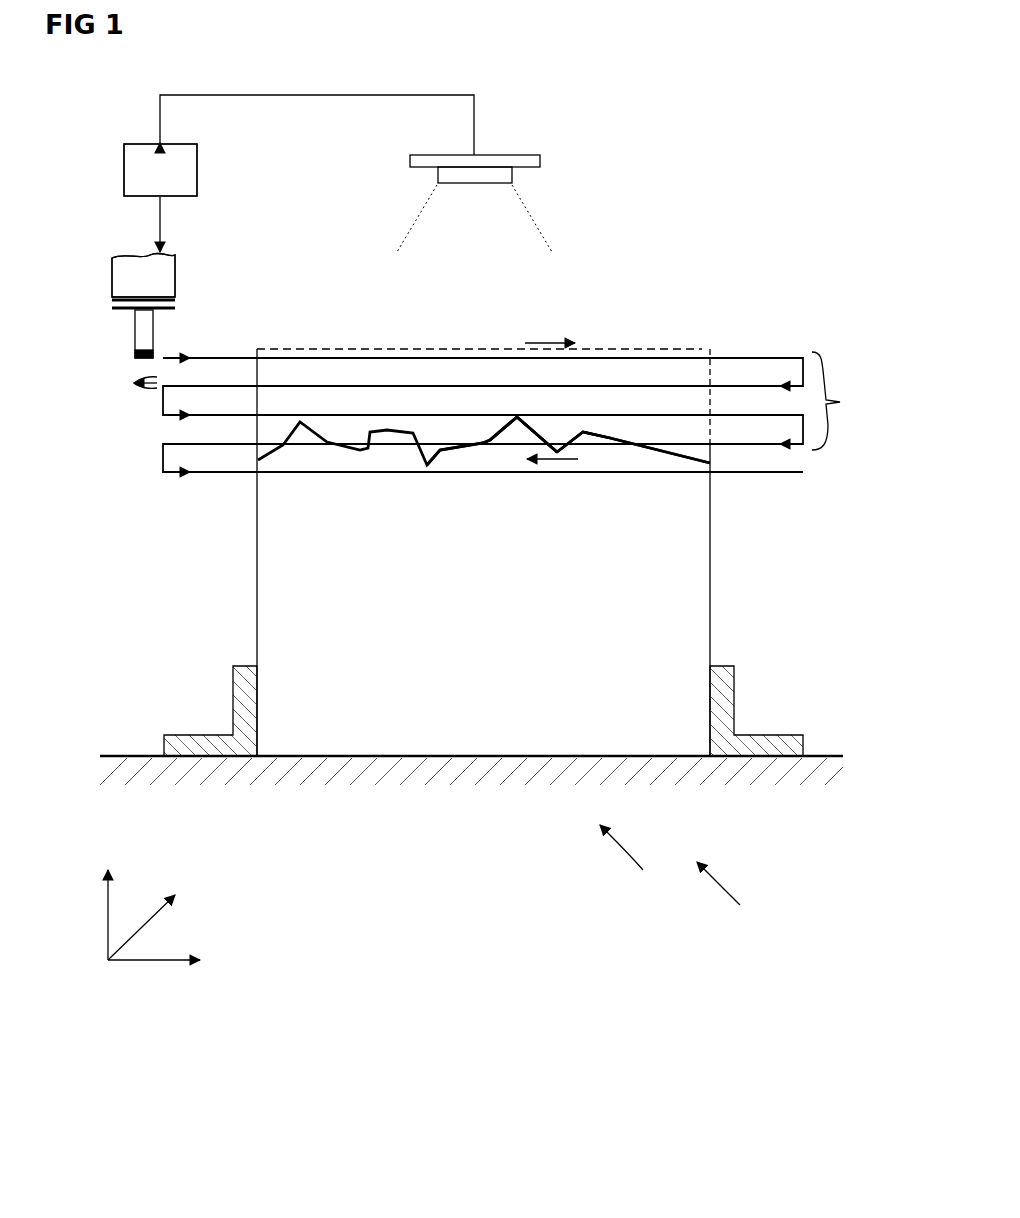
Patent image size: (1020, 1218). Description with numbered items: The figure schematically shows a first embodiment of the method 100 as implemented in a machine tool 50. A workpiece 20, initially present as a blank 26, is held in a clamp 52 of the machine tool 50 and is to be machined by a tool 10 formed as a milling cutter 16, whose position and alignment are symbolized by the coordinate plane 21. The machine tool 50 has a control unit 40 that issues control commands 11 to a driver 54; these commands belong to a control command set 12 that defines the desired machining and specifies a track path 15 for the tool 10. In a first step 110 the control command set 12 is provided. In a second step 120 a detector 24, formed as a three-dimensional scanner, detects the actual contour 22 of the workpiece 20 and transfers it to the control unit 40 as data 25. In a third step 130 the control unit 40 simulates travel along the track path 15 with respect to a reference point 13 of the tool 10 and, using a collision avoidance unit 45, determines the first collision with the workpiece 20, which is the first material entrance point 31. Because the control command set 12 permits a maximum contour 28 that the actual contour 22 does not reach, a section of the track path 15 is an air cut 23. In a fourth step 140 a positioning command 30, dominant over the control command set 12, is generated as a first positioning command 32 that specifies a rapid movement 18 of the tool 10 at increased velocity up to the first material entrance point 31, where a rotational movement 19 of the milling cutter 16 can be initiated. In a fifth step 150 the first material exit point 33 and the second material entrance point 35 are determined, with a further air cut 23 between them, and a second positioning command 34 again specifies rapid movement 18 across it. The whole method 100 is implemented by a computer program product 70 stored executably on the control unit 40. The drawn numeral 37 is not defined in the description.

The tool 10 is at (128, 281).
The control commands 11 is at (264, 224).
The control command set 12 is at (264, 224).
The first step 110 is at (163, 221).
The reference point 13 is at (143, 365).
The track path 15 is at (252, 377).
The milling cutter 16 is at (140, 327).
The rapid movement 18 is at (563, 359).
The positioning command 30 is at (563, 359).
The first positioning command 32 is at (563, 359).
The fourth step 140 is at (545, 340).
The rotational movement 19 is at (143, 390).
The workpiece 20 is at (471, 800).
The blank 26 is at (474, 760).
The coordinate plane 21 is at (158, 963).
The actual contour 22 is at (345, 447).
The data 25 is at (317, 86).
The second step 120 is at (297, 93).
The air cut 23 is at (562, 448).
The detector 24 is at (518, 155).
The maximum contour 28 is at (243, 367).
The first material entrance point 31 is at (718, 380).
The third step 130 is at (637, 444).
The first material exit point 33 is at (565, 447).
The fifth step 150 is at (589, 374).
The second positioning command 34 is at (565, 462).
The second material entrance point 35 is at (555, 450).
The depression 37 is at (555, 450).
The control unit 40 is at (224, 170).
The computer program product 70 is at (198, 170).
The collision avoidance unit 45 is at (124, 172).
The machine tool 50 is at (631, 865).
The clamp 52 is at (240, 704).
The driver 54 is at (117, 263).
The method 100 is at (733, 901).